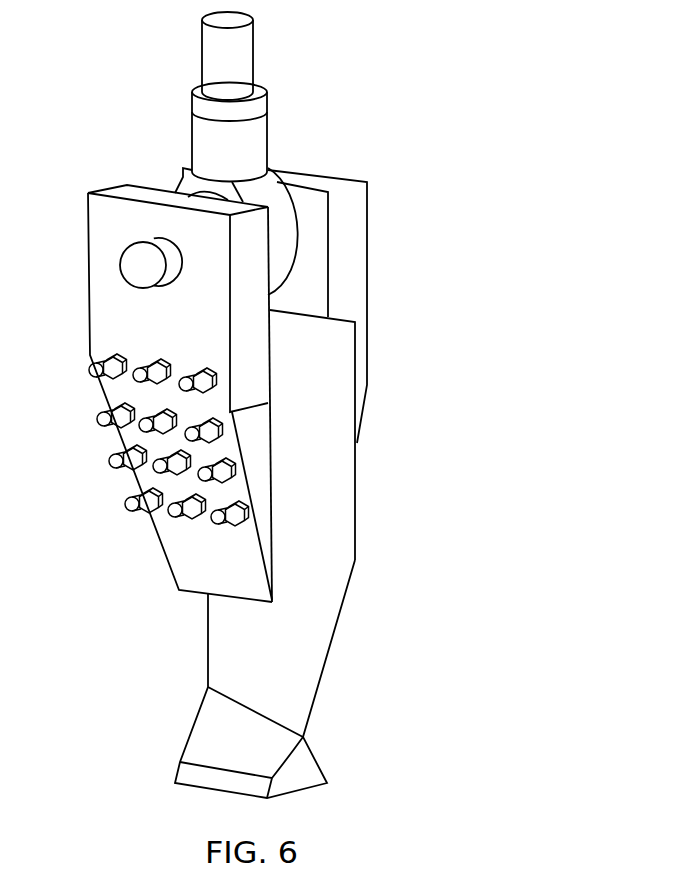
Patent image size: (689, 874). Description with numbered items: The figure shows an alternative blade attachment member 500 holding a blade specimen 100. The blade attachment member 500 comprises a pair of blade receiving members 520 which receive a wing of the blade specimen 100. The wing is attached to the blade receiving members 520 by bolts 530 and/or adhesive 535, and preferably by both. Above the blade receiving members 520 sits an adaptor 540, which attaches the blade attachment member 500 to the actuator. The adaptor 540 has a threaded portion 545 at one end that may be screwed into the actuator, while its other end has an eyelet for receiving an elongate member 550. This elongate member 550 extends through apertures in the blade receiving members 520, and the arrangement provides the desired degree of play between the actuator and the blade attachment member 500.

The blade specimen 100 is at (227, 648).
The blade attachment member 500 is at (458, 158).
The blade receiving members 520 is at (257, 348).
The bolts 530 is at (138, 513).
The adhesive 535 is at (282, 587).
The adaptor 540 is at (192, 140).
The threaded portion 545 is at (254, 66).
The elongate member 550 is at (132, 263).